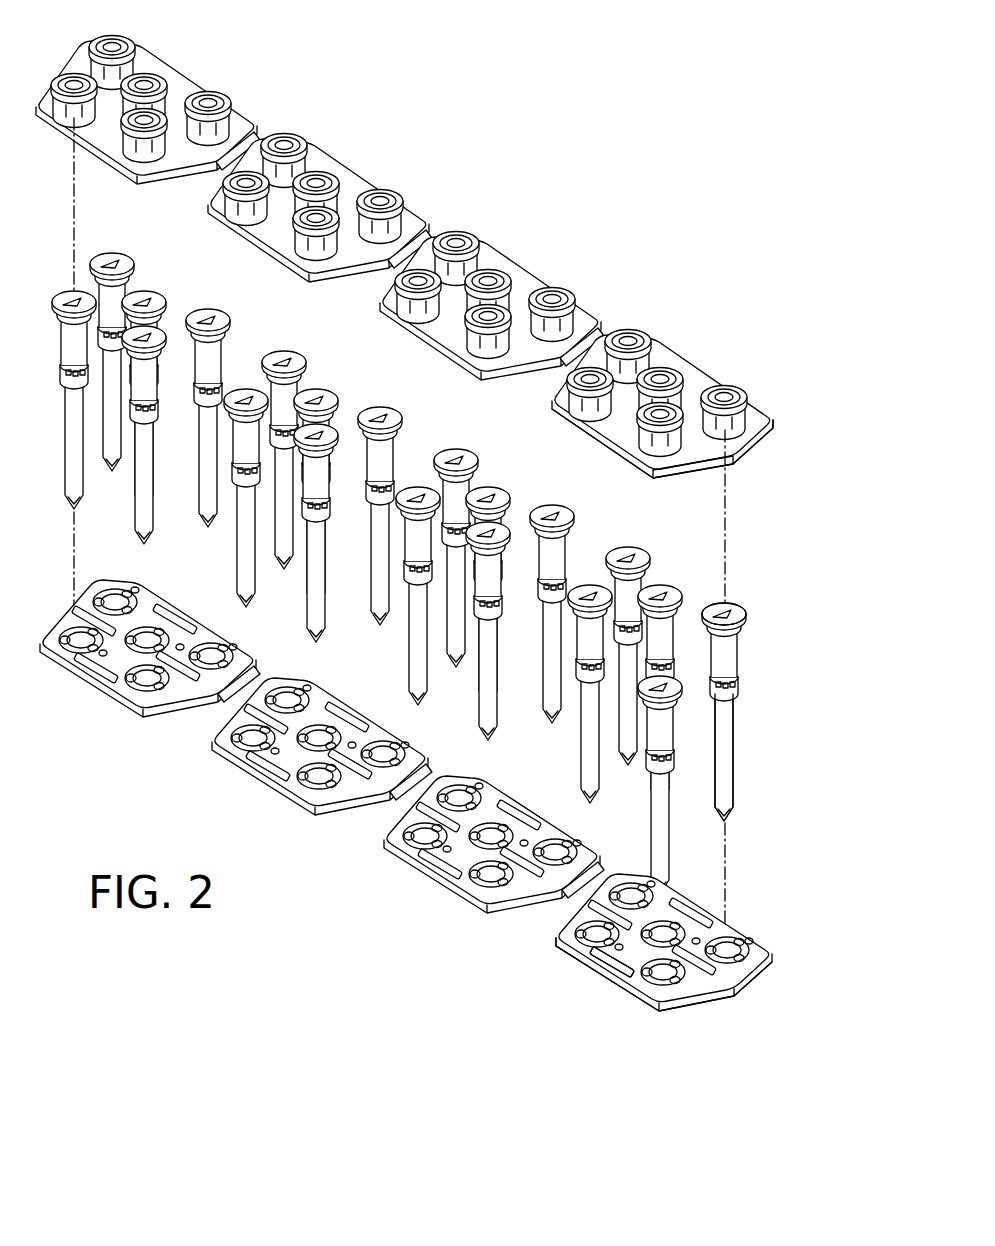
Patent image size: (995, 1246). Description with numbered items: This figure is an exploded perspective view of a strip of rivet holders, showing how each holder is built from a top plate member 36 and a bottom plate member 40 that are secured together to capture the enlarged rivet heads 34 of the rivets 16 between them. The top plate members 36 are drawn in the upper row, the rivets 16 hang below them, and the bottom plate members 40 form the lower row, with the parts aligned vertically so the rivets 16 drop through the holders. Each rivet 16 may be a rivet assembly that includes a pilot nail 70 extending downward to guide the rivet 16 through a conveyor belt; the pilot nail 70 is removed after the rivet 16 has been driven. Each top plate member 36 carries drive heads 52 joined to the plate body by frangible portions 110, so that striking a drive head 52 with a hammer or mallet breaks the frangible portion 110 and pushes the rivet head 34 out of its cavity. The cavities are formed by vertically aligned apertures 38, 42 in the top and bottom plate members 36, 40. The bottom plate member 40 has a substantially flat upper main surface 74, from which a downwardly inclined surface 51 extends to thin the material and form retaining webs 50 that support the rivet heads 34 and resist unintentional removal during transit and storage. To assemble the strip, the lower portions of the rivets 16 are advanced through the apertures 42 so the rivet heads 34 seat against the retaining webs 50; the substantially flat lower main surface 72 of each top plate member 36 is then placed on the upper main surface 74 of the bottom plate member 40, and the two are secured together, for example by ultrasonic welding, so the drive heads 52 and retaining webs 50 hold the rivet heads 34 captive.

The top plate member 36 is at (692, 385).
The drive head 52 is at (733, 386).
The frangible portion 110 is at (757, 428).
The aperture 38 is at (737, 430).
The lower main surface 72 is at (687, 470).
The rivet head 34 is at (740, 612).
The rivet 16 is at (785, 695).
The pilot nail 70 is at (723, 742).
The retaining web 50 is at (735, 945).
The aperture 42 is at (760, 975).
The bottom plate member 40 is at (708, 993).
The upper main surface 74 is at (607, 983).
The downwardly inclined surface 51 is at (557, 938).